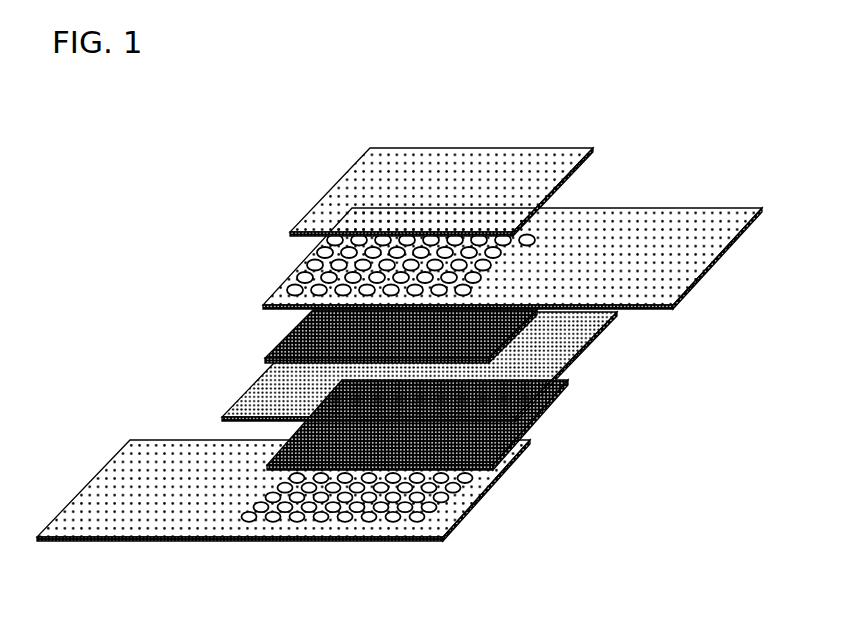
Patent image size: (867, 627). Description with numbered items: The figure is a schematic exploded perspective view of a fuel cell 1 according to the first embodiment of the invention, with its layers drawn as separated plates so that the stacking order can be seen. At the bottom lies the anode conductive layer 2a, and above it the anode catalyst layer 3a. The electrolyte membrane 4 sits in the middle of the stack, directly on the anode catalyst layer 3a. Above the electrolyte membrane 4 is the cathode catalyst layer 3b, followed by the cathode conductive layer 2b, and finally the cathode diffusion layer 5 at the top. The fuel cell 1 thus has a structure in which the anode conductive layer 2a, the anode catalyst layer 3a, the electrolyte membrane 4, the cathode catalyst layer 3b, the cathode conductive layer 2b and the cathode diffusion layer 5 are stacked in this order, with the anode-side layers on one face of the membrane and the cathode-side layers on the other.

The fuel cell 1 is at (598, 92).
The anode conductive layer 2a is at (148, 453).
The cathode conductive layer 2b is at (684, 228).
The anode catalyst layer 3a is at (520, 438).
The cathode catalyst layer 3b is at (286, 338).
The electrolyte membrane 4 is at (548, 344).
The cathode diffusion layer 5 is at (398, 150).